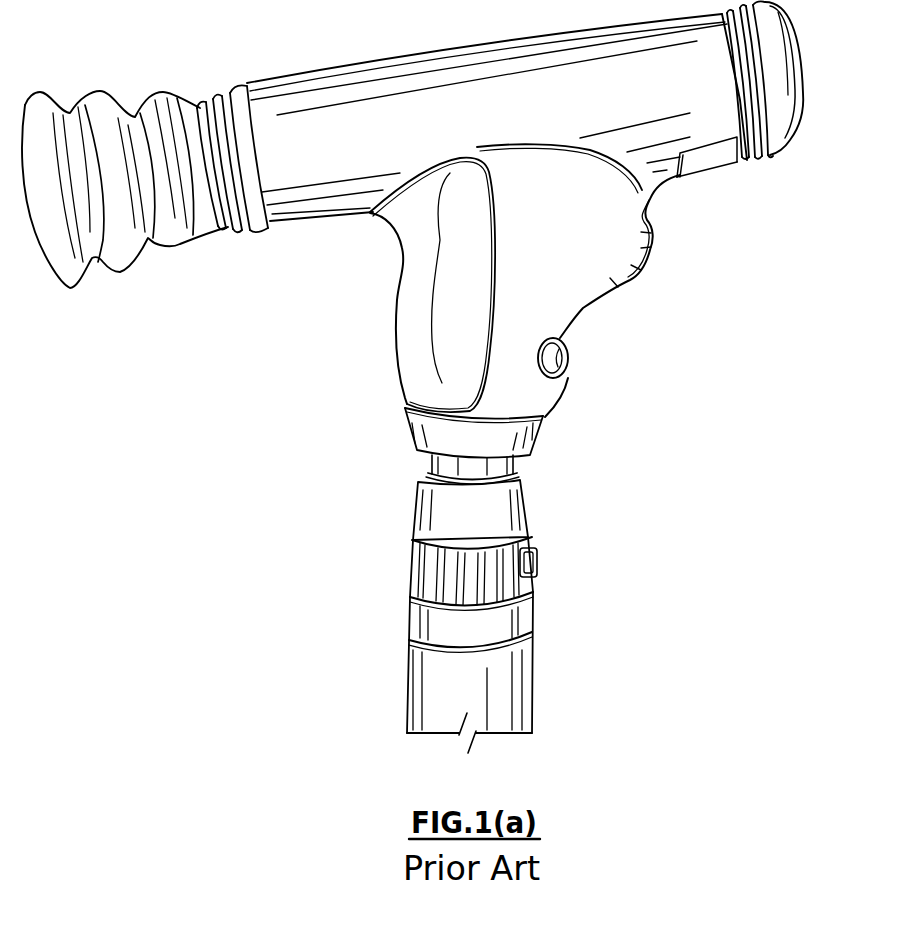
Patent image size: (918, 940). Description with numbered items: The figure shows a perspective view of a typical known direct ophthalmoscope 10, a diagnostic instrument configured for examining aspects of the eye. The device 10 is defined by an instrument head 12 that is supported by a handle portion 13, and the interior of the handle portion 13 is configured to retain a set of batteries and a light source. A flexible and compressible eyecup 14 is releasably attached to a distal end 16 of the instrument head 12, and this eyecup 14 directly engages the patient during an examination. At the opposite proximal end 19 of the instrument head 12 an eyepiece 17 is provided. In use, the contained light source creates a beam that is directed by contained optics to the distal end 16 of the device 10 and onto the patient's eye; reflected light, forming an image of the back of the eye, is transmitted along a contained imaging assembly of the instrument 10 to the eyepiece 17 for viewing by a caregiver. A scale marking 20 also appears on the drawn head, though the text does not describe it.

The direct ophthalmoscope 10 is at (82, 27).
The instrument head 12 is at (365, 62).
The handle portion 13 is at (523, 688).
The eyecup 14 is at (115, 268).
The distal end 16 is at (224, 229).
The eyepiece 17 is at (802, 122).
The proximal end 19 is at (773, 158).
The diopter scale 20 is at (631, 221).